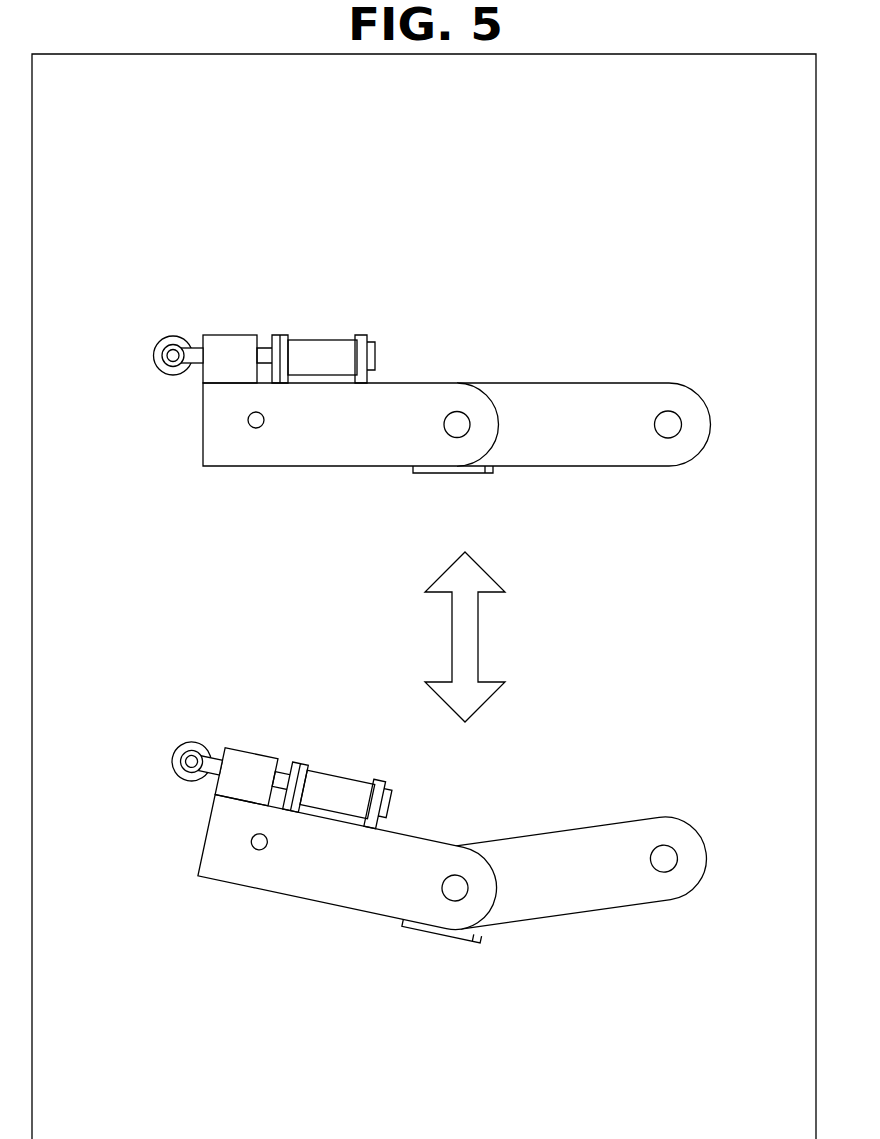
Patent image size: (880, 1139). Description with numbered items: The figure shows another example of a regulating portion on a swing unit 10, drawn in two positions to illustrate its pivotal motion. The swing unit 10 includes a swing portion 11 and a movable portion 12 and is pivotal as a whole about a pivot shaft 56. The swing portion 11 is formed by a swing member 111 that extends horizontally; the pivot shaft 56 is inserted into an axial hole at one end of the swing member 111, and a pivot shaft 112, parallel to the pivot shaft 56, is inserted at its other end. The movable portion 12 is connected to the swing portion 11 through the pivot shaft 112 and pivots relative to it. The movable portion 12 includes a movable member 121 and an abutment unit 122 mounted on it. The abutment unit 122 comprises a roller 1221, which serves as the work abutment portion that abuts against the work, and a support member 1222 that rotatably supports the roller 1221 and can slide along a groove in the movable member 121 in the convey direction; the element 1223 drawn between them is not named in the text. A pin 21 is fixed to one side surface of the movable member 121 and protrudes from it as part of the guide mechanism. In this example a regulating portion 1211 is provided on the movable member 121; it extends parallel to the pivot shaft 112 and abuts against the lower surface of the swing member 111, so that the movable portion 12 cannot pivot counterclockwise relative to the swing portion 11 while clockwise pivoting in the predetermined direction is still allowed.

The swing unit 10 is at (565, 512).
The swing portion 11 is at (654, 487).
The swing member 111 is at (580, 383).
The pivot shaft 112 is at (458, 410).
The pivot shaft 56 is at (672, 412).
The movable portion 12 is at (196, 486).
The movable member 121 is at (332, 467).
The regulating portion 1211 is at (493, 476).
The abutment unit 122 is at (364, 306).
The roller 1221 is at (161, 334).
The support member 1222 is at (226, 335).
The biasing member 1223 is at (311, 340).
The pin 21 is at (256, 429).